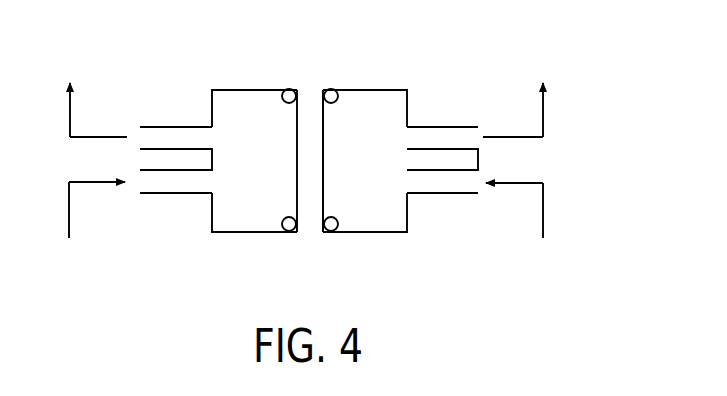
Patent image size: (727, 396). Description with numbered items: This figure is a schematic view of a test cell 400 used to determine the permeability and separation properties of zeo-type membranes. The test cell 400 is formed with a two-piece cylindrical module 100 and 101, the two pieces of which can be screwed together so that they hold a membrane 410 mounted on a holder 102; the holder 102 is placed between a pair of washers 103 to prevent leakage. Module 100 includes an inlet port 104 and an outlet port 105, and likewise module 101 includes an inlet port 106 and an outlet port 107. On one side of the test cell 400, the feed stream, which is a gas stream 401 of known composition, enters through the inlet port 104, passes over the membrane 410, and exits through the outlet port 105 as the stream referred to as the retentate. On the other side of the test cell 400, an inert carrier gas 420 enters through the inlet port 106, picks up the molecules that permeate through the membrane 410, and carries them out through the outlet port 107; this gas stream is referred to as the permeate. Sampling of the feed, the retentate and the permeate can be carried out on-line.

The module 100 is at (253, 120).
The module 101 is at (382, 120).
The holder 102 is at (313, 192).
The washers 103 is at (329, 239).
The inlet port 104 is at (190, 194).
The outlet port 105 is at (163, 125).
The inlet port 106 is at (437, 195).
The outlet port 107 is at (442, 125).
The test cell 400 is at (317, 179).
The gas stream 401 is at (69, 203).
The membrane 410 is at (331, 126).
The inert carrier gas 420 is at (520, 182).